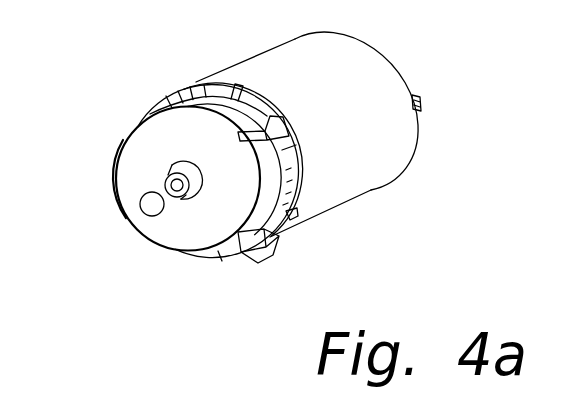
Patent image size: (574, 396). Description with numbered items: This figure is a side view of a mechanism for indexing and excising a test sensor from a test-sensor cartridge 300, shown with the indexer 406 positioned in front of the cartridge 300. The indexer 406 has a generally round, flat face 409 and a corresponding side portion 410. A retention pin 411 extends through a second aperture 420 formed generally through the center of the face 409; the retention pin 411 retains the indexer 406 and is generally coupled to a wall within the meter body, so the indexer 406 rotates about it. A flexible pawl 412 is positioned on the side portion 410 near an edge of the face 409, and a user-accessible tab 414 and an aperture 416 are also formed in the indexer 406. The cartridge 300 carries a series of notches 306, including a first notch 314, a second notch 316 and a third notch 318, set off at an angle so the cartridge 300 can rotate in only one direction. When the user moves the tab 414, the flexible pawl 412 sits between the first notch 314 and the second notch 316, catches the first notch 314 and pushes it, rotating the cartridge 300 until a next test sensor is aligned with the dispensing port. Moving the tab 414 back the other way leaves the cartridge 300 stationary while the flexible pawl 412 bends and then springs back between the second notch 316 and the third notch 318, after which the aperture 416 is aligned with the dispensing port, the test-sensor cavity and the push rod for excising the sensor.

The cartridge 300 is at (360, 193).
The notches 306 is at (224, 96).
The first notch 314 is at (266, 113).
The second notch 316 is at (300, 158).
The third notch 318 is at (291, 220).
The indexer 406 is at (178, 132).
The face 409 is at (128, 191).
The side portion 410 is at (207, 110).
The retention pin 411 is at (167, 186).
The flexible pawl 412 is at (286, 138).
The user-accessible tab 414 is at (237, 262).
The aperture 416 is at (143, 205).
The second aperture 420 is at (177, 209).